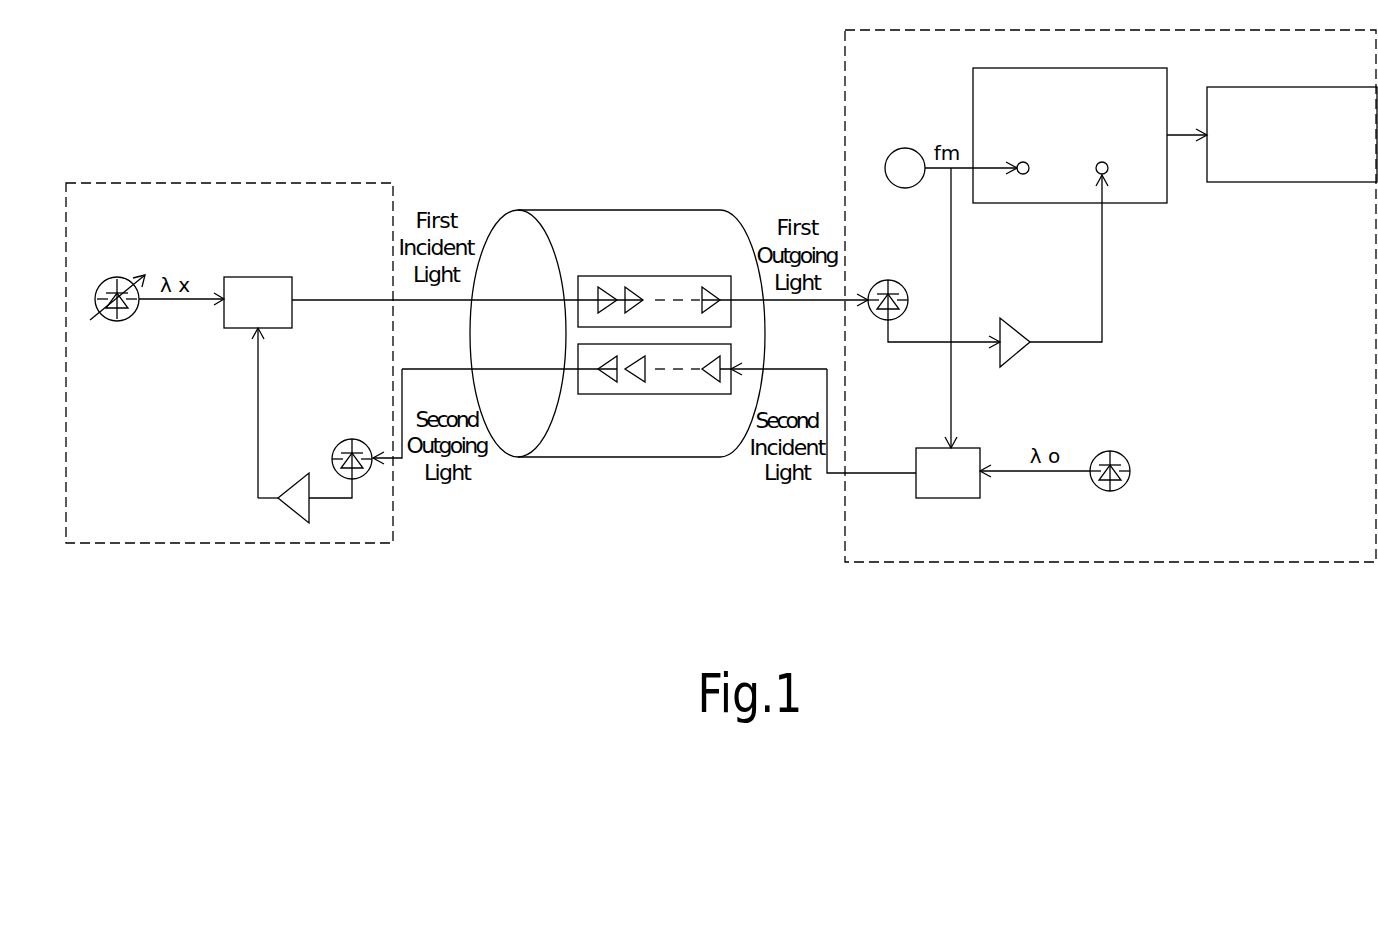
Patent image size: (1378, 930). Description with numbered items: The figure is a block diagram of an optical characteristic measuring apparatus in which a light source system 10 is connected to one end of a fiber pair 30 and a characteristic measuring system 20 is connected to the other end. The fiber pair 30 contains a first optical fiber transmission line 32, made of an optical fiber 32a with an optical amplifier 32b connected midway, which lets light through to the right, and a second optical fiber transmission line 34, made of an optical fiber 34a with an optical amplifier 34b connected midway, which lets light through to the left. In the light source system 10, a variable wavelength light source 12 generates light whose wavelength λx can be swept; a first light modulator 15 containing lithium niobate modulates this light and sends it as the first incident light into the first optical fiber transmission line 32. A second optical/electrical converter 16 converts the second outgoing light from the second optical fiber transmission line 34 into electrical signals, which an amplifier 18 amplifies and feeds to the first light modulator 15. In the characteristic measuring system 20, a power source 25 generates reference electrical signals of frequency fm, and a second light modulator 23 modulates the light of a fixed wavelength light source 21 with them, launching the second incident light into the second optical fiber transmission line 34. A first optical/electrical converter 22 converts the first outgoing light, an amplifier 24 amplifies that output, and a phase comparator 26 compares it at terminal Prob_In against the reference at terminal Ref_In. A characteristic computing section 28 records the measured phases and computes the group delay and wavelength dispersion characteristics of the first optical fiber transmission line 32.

The light source system 10 is at (217, 545).
The variable wavelength light source 12 is at (122, 275).
The first light modulator 15 is at (265, 277).
The second optical/electrical converter 16 is at (339, 440).
The amplifier 18 is at (299, 481).
The characteristic measuring system 20 is at (1090, 563).
The fixed wavelength light source 21 is at (1116, 451).
The first optical/electrical converter 22 is at (892, 280).
The second light modulator 23 is at (945, 498).
The amplifier 24 is at (1020, 355).
The power source (signal source) 25 is at (905, 148).
The phase comparator 26 is at (1032, 203).
The characteristic computing section 28 is at (1250, 182).
The fiber pair 30 is at (622, 210).
The first optical fiber transmission line 32 is at (710, 280).
The optical fiber 32a is at (645, 300).
The optical amplifier 32b is at (605, 290).
The second optical fiber transmission line 34 is at (690, 395).
The optical fiber 34a is at (620, 395).
The optical amplifier 34b is at (600, 395).